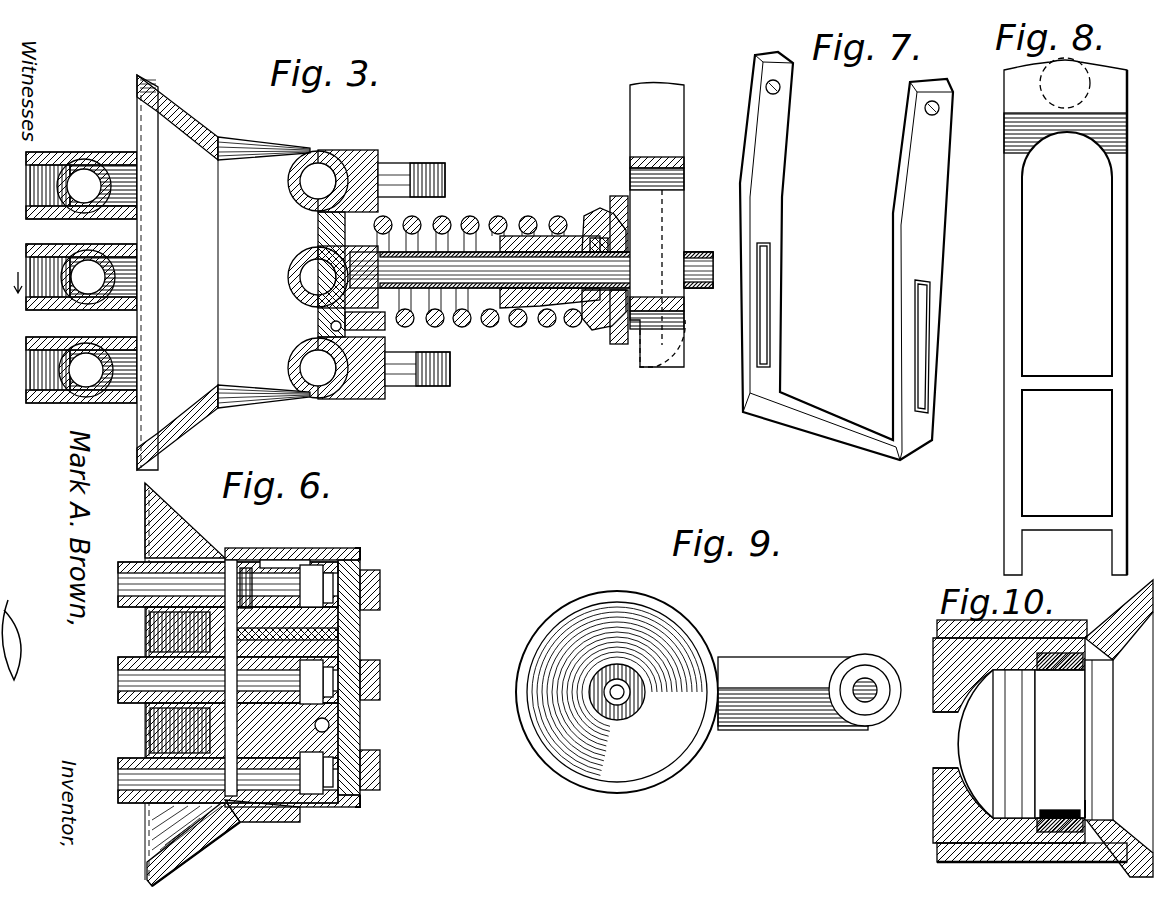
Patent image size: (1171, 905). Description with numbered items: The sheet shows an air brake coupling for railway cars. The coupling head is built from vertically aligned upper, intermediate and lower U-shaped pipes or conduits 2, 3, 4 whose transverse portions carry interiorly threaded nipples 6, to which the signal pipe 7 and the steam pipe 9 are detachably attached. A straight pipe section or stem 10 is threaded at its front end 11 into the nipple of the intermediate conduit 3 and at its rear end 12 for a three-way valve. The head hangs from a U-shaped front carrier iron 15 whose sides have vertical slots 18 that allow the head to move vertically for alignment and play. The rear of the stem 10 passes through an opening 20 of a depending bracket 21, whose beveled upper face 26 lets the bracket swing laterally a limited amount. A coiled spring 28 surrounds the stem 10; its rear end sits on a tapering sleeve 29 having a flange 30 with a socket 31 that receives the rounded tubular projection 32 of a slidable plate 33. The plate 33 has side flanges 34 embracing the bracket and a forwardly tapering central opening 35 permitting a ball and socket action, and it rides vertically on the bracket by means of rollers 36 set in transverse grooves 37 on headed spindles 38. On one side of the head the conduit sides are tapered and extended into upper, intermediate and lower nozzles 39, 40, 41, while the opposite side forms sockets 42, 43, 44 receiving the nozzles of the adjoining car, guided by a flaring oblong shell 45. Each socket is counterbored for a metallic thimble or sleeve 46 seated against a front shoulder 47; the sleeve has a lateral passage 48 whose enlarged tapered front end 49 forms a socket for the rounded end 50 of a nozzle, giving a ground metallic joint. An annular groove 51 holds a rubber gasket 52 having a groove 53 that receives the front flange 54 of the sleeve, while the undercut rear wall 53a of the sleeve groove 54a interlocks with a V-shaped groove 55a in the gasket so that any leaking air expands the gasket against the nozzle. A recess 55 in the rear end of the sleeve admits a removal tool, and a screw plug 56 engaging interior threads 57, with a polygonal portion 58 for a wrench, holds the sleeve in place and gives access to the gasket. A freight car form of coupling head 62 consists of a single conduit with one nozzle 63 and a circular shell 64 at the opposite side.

In FIG. 3, the upper pipe or conduit 2 is at (290, 183).
In FIG. 3, the intermediate pipe or conduit 3 is at (290, 277).
In FIG. 3, the lower pipe or conduit 4 is at (292, 366).
In FIG. 3, the tubular extensions or nipples 6 is at (46, 152).
In FIG. 3, the signal pipe 7 is at (398, 180).
In FIG. 3, the steam or head pipe 9 is at (412, 388).
In FIG. 3, the pipe section or coupling sleeve 10 is at (452, 250).
In FIG. 3, the outer or front end of pipe section 11 is at (316, 318).
In FIG. 3, the rear end of pipe section 12 is at (708, 250).
In FIG. 7, the front hanger member or carrier iron 15 is at (767, 188).
In FIG. 7, the vertical slots 18 is at (918, 346).
In FIG. 3, the opening of bracket 20 is at (660, 200).
In FIG. 8, the opening of bracket 20 is at (1065, 317).
In FIG. 3, the bracket 21 is at (648, 88).
In FIG. 8, the bracket 21 is at (1024, 296).
In FIG. 8, the upper end or face of bracket 26 is at (1065, 83).
In FIG. 3, the coiled spring 28 is at (500, 232).
In FIG. 3, the tapering sleeve 29 is at (546, 218).
In FIG. 3, the enlarged portion or flange 30 is at (578, 218).
In FIG. 3, the socket 31 is at (578, 328).
In FIG. 3, the rounded tubular projecting portion 32 is at (596, 234).
In FIG. 3, the slidable plate or member 33 is at (614, 346).
In FIG. 3, the side flanges 34 is at (682, 345).
In FIG. 3, the central opening 35 is at (600, 326).
In FIG. 3, the rollers 36 is at (648, 214).
In FIG. 3, the transverse grooves 37 is at (616, 196).
In FIG. 3, the pivots or spindles 38 is at (650, 156).
In FIG. 3, the upper tubular extension or nozzle 39 is at (152, 188).
In FIG. 6, the upper tubular extension or nozzle 39 is at (228, 584).
In FIG. 3, the intermediate tubular extension or nozzle 40 is at (152, 276).
In FIG. 6, the intermediate tubular extension or nozzle 40 is at (228, 680).
In FIG. 3, the lower tubular extension or nozzle 41 is at (152, 357).
In FIG. 6, the lower tubular extension or nozzle 41 is at (228, 780).
In FIG. 6, the upper opening or socket 42 is at (275, 556).
In FIG. 6, the intermediate opening or socket 43 is at (242, 730).
In FIG. 6, the lower opening or socket 44 is at (200, 840).
In FIG. 3, the oblong shell 45 is at (185, 438).
In FIG. 6, the oblong shell 45 is at (145, 852).
In FIG. 10, the oblong shell 45 is at (1119, 728).
In FIG. 6, the thimble or sleeve 46 is at (312, 560).
In FIG. 10, the thimble or sleeve 46 is at (940, 814).
In FIG. 6, the front shoulder 47 is at (232, 548).
In FIG. 10, the front shoulder 47 is at (1094, 668).
In FIG. 3, the passage 48 is at (295, 247).
In FIG. 6, the passage 48 is at (348, 550).
In FIG. 10, the passage 48 is at (940, 748).
In FIG. 6, the front end of passage 49 is at (340, 604).
In FIG. 10, the front end of passage 49 is at (972, 694).
In FIG. 6, the end of tubular extension or nozzle 50 is at (242, 632).
In FIG. 6, the annular groove 51 is at (248, 566).
In FIG. 6, the gasket 52 is at (186, 833).
In FIG. 9, the gasket 52 is at (624, 718).
In FIG. 10, the gasket 52 is at (1060, 742).
In FIG. 10, the groove of gasket 53 is at (1088, 804).
In FIG. 10, the inner or rear wall of groove 53a is at (960, 856).
In FIG. 10, the front wall or flange 54 is at (1082, 620).
In FIG. 10, the groove of sleeve or thimble 54a is at (1062, 848).
In FIG. 6, the recess 55 is at (382, 576).
In FIG. 10, the V-shaped groove 55a is at (1054, 812).
In FIG. 6, the screw plug 56 is at (362, 556).
In FIG. 6, the interior threads 57 is at (362, 548).
In FIG. 6, the projecting polygonal portion 58 is at (380, 598).
In FIG. 9, the coupling head 62 is at (793, 676).
In FIG. 9, the nozzle 63 is at (866, 674).
In FIG. 9, the circular shell 64 is at (614, 786).